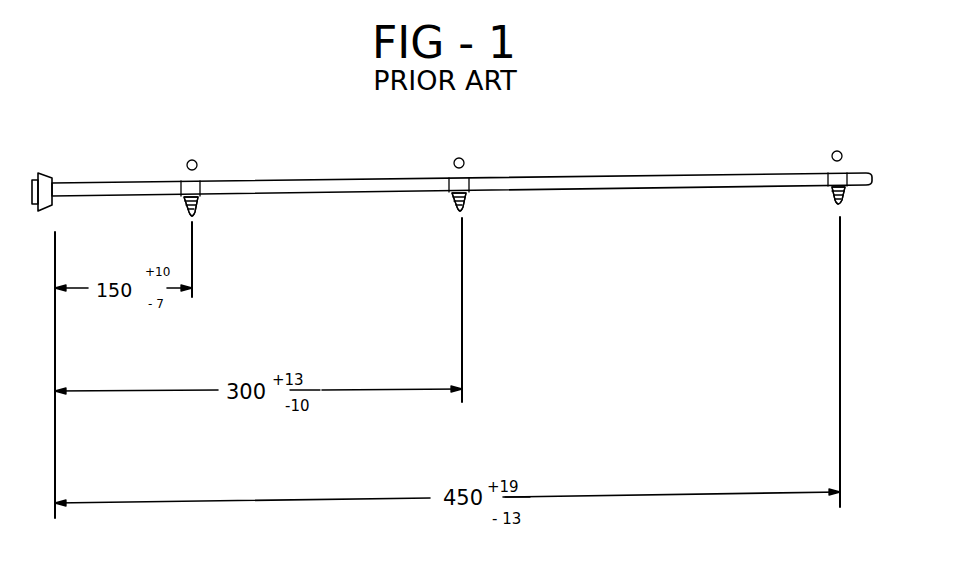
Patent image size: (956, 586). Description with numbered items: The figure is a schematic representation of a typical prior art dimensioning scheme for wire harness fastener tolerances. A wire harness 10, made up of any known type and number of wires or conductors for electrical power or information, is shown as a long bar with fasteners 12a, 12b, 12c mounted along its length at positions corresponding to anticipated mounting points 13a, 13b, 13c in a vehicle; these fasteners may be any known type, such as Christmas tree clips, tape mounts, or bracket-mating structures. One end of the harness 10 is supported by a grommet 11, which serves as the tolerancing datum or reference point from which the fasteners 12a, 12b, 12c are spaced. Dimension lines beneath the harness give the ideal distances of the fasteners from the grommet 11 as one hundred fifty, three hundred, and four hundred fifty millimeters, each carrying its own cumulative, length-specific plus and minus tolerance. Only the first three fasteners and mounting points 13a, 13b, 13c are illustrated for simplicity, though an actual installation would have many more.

The wire harness 10 is at (630, 183).
The grommet 11 is at (42, 184).
The fastener 12a is at (198, 204).
The fastener 12b is at (466, 200).
The fastener 12c is at (831, 198).
The mounting point 13a is at (190, 160).
The mounting point 13b is at (461, 158).
The mounting point 13c is at (837, 151).